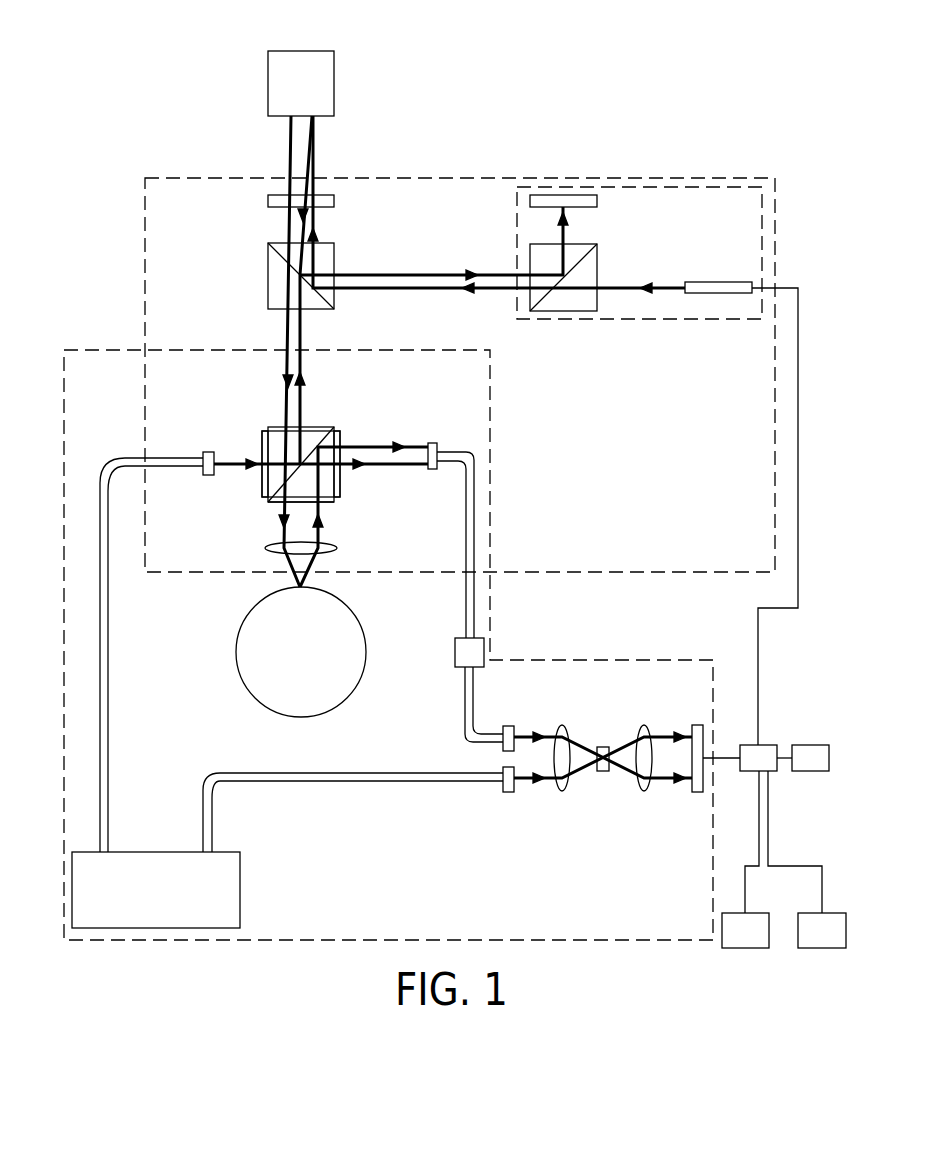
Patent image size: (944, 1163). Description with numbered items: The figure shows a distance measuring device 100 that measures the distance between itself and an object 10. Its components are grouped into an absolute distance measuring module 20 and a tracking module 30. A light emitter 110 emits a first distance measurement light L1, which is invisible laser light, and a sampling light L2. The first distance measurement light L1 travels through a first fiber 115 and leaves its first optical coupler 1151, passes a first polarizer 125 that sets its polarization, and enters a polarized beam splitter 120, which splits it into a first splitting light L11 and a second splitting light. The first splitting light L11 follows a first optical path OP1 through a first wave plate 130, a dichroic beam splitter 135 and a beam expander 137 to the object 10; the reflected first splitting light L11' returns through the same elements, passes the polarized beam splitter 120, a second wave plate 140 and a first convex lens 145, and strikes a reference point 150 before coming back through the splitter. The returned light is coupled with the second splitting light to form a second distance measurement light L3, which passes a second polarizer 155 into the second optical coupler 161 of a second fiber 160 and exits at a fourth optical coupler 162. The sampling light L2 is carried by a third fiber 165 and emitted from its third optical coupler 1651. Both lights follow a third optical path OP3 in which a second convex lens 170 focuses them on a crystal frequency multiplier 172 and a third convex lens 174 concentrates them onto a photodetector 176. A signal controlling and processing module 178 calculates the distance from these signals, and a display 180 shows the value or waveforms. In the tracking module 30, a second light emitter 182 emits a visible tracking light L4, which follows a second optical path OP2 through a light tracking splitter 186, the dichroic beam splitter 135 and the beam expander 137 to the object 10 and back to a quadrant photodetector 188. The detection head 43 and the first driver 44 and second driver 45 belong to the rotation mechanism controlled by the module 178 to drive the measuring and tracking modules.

The distance measuring device 100 is at (481, 40).
The object 10 is at (334, 80).
The beam expander 137 is at (334, 200).
The dichroic beam splitter 135 is at (334, 262).
The second optical path OP2 is at (410, 293).
The detection head 43 is at (560, 186).
The tracking module 30 is at (677, 180).
The quadrant photodetector 188 is at (597, 200).
The light tracking splitter 186 is at (529, 262).
The tracking light L4 is at (617, 286).
The second light emitter 182 is at (716, 281).
The absolute distance measuring module 20 is at (89, 348).
The first splitting light reflected from the object L11' is at (262, 351).
The first splitting light L11 is at (324, 290).
The first optical path OP1 is at (222, 455).
The first optical coupler 1151 is at (208, 450).
The first distance measurement light L1 is at (243, 462).
The first wave plate 130 is at (320, 426).
The second polarizer 155 is at (342, 431).
The second optical coupler 161 is at (432, 442).
The first polarizer 125 is at (261, 481).
The second wave plate 140 is at (274, 503).
The polarized beam splitter 120 is at (338, 497).
The second fiber 160 is at (465, 521).
The first convex lens 145 is at (338, 548).
The reference point 150 is at (240, 674).
The first fiber 115 is at (109, 688).
The light emitter 110 is at (241, 890).
The fourth optical coupler 162 is at (508, 725).
The second distance measurement light L3 is at (527, 734).
The second convex lens 170 is at (568, 727).
The crystal frequency multiplier 172 is at (603, 745).
The third convex lens 174 is at (648, 727).
The photodetector 176 is at (697, 724).
The signal controlling and processing module 178 is at (750, 744).
The display 180 is at (812, 744).
The third optical coupler 1651 is at (508, 793).
The sampling light L2 is at (528, 784).
The third optical path OP3 is at (580, 778).
The third fiber 165 is at (390, 782).
The first driver 44 is at (759, 943).
The second driver 45 is at (836, 943).